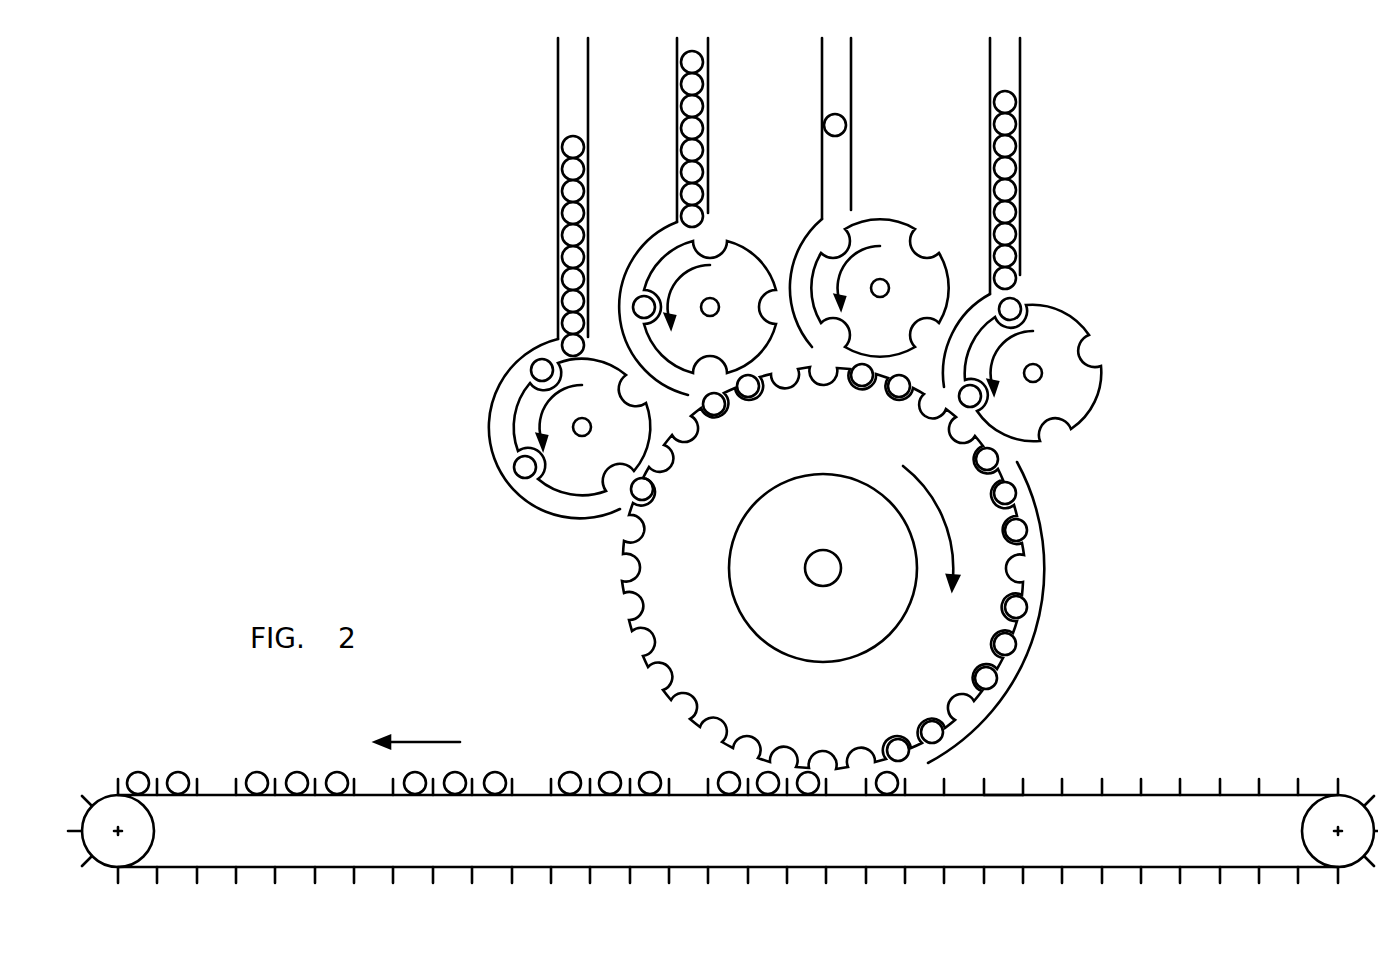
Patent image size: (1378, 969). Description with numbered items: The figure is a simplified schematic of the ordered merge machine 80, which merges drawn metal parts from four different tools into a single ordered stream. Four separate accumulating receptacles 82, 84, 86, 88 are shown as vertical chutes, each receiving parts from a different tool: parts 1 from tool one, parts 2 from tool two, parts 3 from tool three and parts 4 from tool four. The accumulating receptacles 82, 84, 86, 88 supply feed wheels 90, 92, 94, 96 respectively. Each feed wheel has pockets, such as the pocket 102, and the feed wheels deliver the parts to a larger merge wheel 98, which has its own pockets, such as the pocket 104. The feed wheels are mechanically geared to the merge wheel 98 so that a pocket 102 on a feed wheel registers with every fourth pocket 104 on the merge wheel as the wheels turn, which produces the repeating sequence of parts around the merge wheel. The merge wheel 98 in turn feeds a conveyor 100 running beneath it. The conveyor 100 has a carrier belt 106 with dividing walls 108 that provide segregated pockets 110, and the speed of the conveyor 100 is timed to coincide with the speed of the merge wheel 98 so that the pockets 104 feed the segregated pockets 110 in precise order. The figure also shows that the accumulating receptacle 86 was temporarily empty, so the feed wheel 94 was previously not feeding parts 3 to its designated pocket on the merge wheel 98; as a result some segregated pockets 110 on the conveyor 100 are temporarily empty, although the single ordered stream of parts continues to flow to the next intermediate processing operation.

The part from tool one 1 is at (573, 147).
The part from tool two 2 is at (692, 128).
The part from tool three 3 is at (835, 125).
The part from tool four 4 is at (1005, 190).
The ordered merge machine 80 is at (1109, 193).
The accumulating receptacle 82 is at (558, 100).
The accumulating receptacle 84 is at (677, 84).
The accumulating receptacle 86 is at (822, 80).
The accumulating receptacle 88 is at (990, 83).
The feed wheel 90 is at (523, 402).
The feed wheel 92 is at (748, 256).
The feed wheel 94 is at (884, 232).
The feed wheel 96 is at (1063, 327).
The merge wheel 98 is at (990, 567).
The conveyor 100 is at (1250, 750).
The pocket 102 is at (622, 508).
The pocket 104 is at (648, 508).
The carrier belt 106 is at (992, 797).
The dividing wall 108 is at (1062, 792).
The segregated pocket 110 is at (1120, 782).